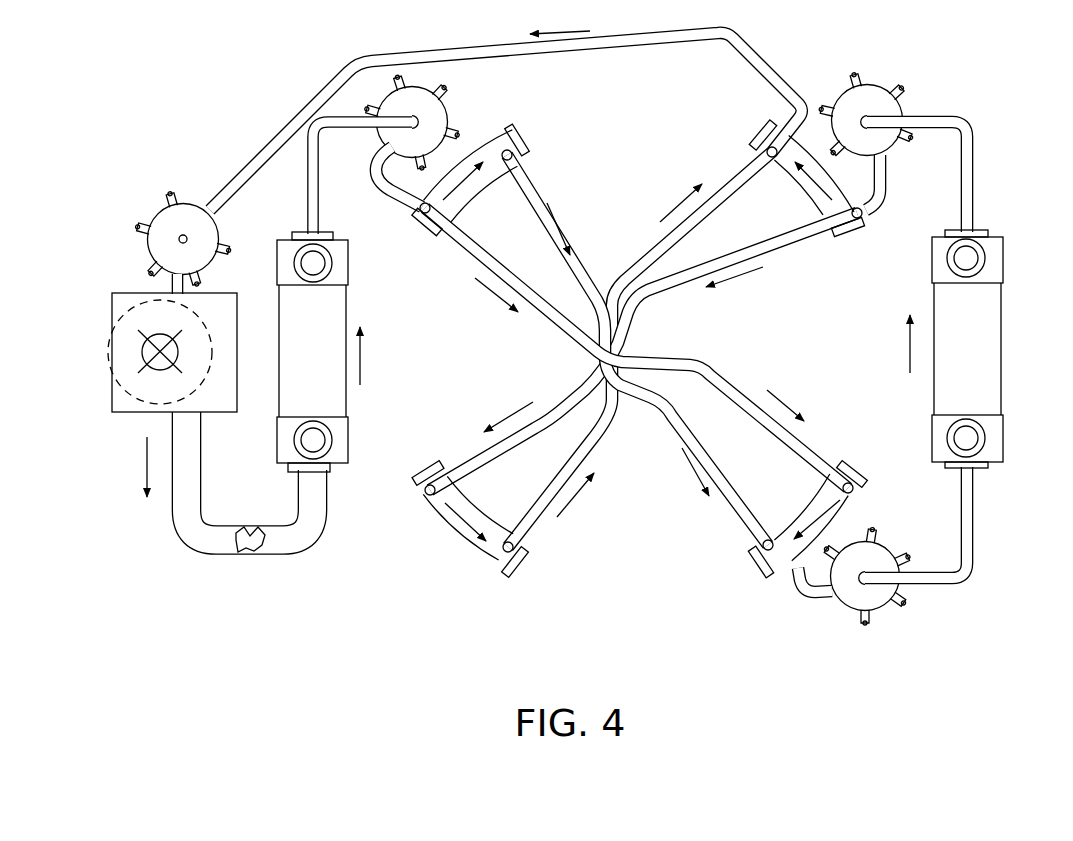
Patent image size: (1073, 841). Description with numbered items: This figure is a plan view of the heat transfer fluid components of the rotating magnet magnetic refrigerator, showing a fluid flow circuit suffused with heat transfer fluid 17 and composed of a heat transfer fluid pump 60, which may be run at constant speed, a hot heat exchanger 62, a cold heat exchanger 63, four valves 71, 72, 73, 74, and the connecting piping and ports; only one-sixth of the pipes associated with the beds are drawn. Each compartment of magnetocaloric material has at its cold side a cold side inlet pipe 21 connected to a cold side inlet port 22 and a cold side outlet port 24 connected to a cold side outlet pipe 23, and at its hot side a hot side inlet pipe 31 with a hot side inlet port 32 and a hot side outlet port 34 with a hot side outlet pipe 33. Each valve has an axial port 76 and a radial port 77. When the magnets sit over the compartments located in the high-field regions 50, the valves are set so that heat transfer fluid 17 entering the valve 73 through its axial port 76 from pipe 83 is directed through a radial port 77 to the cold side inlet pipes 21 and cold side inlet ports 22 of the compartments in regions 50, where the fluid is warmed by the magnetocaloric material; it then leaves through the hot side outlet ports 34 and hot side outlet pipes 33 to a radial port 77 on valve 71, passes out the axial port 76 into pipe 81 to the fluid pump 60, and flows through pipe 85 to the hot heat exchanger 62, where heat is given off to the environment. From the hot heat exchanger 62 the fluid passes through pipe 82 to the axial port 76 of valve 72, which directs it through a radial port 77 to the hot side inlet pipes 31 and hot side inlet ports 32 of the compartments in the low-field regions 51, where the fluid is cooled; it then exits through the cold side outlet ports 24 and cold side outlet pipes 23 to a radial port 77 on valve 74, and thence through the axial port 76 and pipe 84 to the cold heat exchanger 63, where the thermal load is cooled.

The heat transfer fluid 17 is at (252, 545).
The cold side inlet pipe 21 is at (865, 195).
The cold side inlet port 22 is at (862, 213).
The cold side outlet pipe 23 is at (523, 188).
The cold side outlet port 24 is at (507, 150).
The hot side inlet pipe 31 is at (378, 167).
The hot side inlet port 32 is at (425, 210).
The hot side outlet pipe 33 is at (740, 177).
The hot side outlet port 34 is at (773, 150).
The region nearest the magnets 50 is at (837, 183).
The region far from the magnets 51 is at (483, 147).
The heat transfer fluid pump 60 is at (138, 330).
The hot heat exchanger 62 is at (292, 377).
The cold heat exchanger 63 is at (990, 353).
The valve 71 is at (162, 222).
The valve 72 is at (422, 98).
The valve 73 is at (867, 93).
The valve 74 is at (872, 597).
The axial port 76 is at (412, 120).
The radial port 77 is at (382, 153).
The pipe 81 is at (173, 283).
The pipe 82 is at (320, 125).
The pipe 83 is at (915, 117).
The pipe 84 is at (968, 485).
The pipe 85 is at (180, 427).